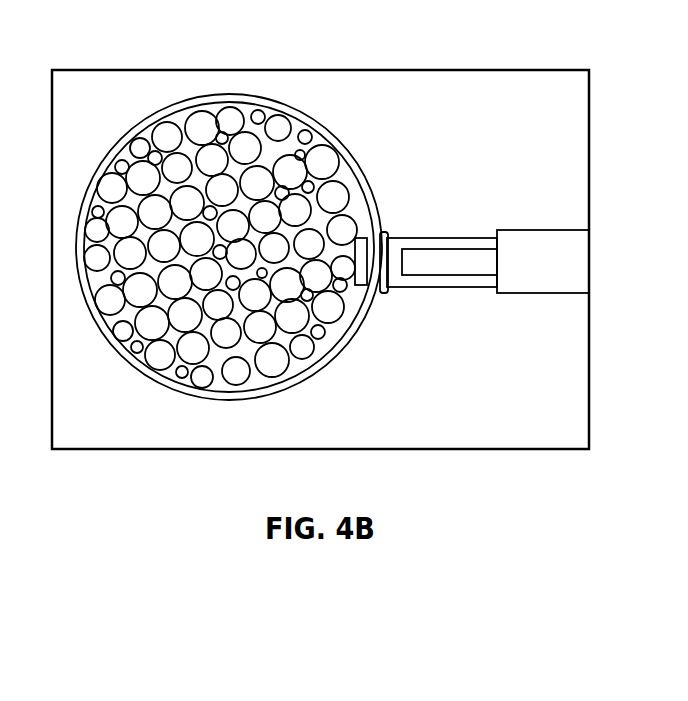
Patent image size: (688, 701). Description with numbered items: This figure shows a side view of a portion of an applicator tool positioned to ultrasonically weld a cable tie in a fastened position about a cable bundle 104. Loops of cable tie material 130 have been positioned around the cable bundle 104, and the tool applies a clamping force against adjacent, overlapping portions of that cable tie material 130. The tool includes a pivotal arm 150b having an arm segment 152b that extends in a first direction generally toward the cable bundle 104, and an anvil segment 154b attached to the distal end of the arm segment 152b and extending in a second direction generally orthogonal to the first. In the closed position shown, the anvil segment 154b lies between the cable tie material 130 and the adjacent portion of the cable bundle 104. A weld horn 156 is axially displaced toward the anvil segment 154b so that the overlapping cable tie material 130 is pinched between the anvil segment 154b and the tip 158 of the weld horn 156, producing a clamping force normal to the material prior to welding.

The cable bundle 104 is at (177, 170).
The cable tie material 130 is at (340, 152).
The pivotal arm 150b is at (453, 230).
The arm segment 152b is at (449, 262).
The anvil segment 154b is at (362, 267).
The weld horn 156 is at (452, 260).
The tip 158 is at (392, 262).